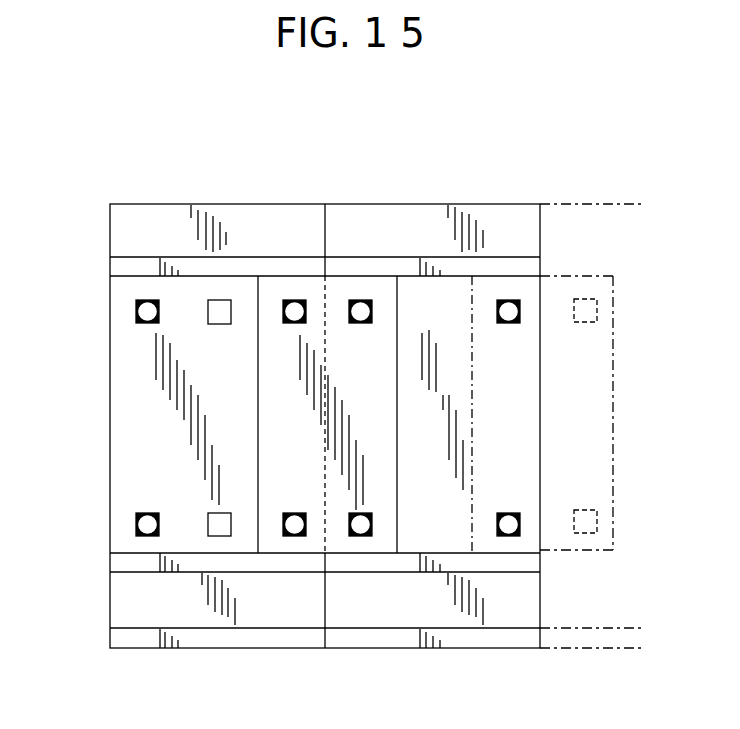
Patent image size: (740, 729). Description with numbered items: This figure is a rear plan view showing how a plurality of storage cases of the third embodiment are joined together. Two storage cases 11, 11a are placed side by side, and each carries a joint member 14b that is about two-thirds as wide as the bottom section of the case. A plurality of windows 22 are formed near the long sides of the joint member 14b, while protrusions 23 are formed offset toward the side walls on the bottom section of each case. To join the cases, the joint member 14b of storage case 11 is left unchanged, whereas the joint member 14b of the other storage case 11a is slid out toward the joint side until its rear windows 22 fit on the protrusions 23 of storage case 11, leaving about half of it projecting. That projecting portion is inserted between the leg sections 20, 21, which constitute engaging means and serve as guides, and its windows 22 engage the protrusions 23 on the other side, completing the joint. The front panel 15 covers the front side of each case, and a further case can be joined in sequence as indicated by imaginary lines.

The storage case 11 is at (178, 186).
The storage case 11a is at (464, 186).
The leg section 21 is at (113, 272).
The leg section 20 is at (115, 565).
The front panel 15 is at (150, 640).
The joint member 14b is at (143, 464).
The window 22 is at (218, 302).
The protrusion 23 is at (358, 302).